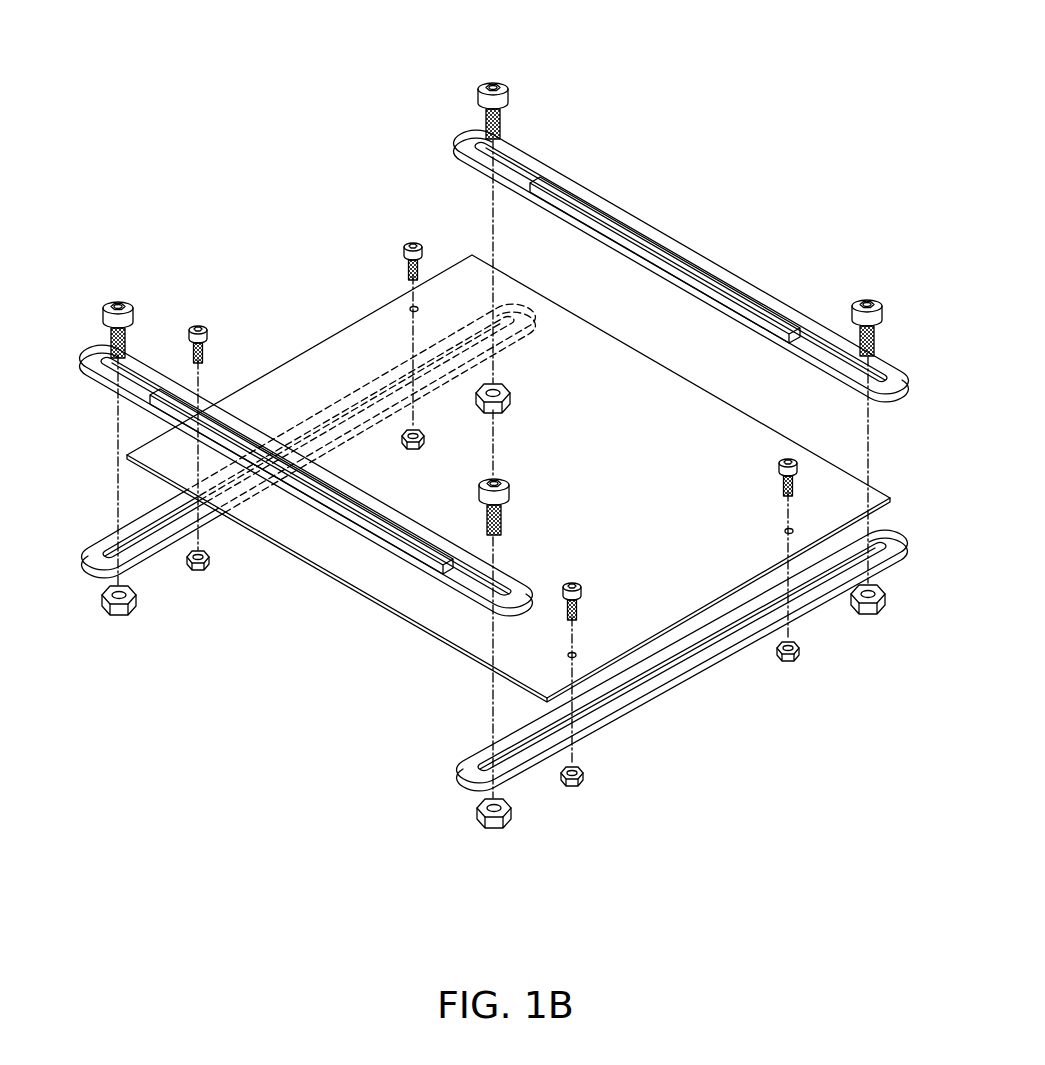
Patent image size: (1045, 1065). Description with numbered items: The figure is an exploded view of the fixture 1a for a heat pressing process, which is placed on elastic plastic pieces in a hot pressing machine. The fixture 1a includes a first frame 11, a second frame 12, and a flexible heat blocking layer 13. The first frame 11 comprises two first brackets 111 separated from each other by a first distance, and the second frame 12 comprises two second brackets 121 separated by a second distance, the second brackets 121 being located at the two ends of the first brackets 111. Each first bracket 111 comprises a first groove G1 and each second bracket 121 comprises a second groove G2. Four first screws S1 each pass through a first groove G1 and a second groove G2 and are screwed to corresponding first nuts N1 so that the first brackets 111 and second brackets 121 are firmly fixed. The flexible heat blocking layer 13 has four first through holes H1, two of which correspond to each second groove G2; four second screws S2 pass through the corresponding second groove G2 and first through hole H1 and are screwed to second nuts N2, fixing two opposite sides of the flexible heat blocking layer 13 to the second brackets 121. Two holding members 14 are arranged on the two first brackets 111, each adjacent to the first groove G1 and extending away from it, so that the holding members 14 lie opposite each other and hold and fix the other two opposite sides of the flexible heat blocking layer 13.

The fixture for heat pressing process 1a is at (262, 44).
The first frame 11 is at (494, 401).
The first bracket 111 is at (610, 215).
The second frame 12 is at (473, 547).
The second bracket 121 is at (108, 560).
The flexible heat blocking layer 13 is at (372, 576).
The holding member 14 is at (705, 290).
The first groove G1 is at (520, 172).
The second groove G2 is at (138, 540).
The first through hole H1 is at (412, 309).
The first screw S1 is at (500, 88).
The second screw S2 is at (408, 243).
The first nut N1 is at (520, 398).
The second nut N2 is at (430, 438).